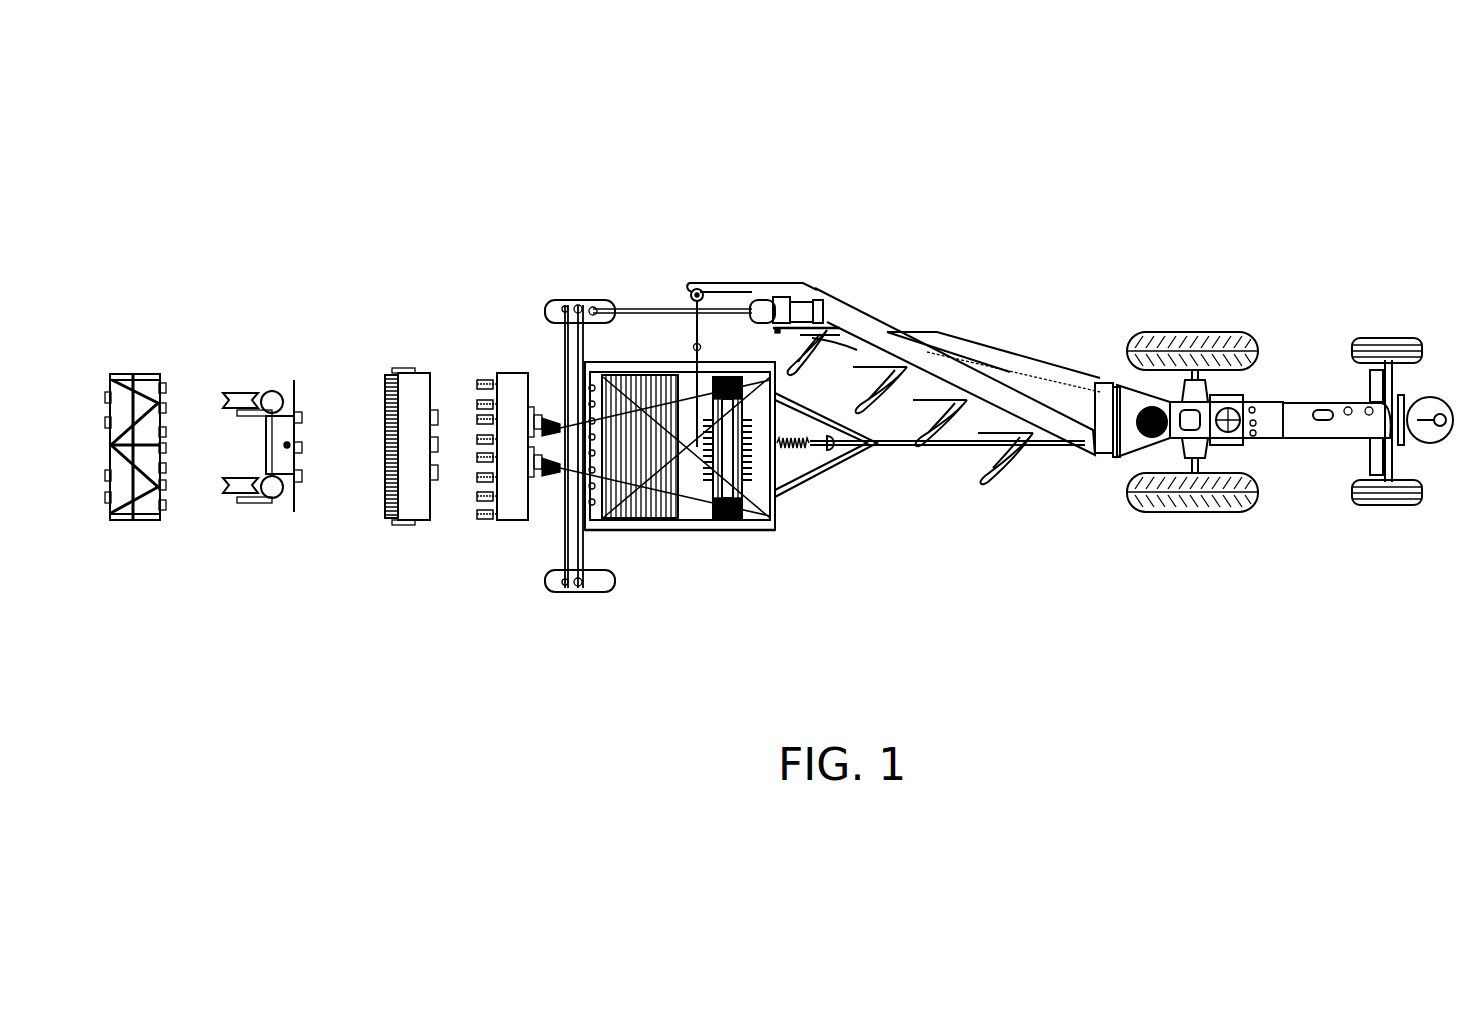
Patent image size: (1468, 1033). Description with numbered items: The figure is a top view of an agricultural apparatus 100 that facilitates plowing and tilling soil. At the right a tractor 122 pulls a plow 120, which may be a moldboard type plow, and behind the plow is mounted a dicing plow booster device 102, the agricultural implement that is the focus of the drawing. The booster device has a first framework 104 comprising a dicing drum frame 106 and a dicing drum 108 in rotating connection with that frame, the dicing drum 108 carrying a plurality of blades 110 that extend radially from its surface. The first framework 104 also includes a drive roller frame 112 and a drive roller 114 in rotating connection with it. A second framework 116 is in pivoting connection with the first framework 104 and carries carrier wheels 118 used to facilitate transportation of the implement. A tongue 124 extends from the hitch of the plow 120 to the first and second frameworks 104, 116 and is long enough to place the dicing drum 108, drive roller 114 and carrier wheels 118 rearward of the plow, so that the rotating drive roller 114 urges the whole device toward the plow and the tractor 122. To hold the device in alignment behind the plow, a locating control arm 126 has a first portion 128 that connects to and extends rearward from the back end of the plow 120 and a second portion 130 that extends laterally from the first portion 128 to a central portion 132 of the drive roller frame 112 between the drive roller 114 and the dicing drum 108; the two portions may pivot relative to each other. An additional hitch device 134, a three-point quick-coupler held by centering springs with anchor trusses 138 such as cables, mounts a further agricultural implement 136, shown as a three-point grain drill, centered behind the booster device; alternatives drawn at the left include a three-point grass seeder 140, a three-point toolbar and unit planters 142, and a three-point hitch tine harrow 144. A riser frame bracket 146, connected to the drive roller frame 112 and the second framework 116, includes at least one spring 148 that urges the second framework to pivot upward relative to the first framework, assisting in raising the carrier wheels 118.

The agricultural apparatus 100 is at (1116, 172).
The dicing plow booster device 102 is at (686, 560).
The first framework 104 is at (707, 523).
The dicing drum frame 106 is at (775, 527).
The dicing drum 108 is at (777, 497).
The blades 110 is at (758, 382).
The drive roller frame 112 is at (667, 520).
The drive roller 114 is at (645, 520).
The second framework 116 is at (562, 523).
The carrier wheels 118 is at (547, 575).
The plow 120 is at (990, 532).
The tractor 122 is at (1298, 507).
The tongue 124 is at (935, 448).
The locating control arm 126 is at (716, 272).
The first portion 128 is at (813, 287).
The second portion 130 is at (694, 343).
The central portion 132 is at (699, 462).
The additional hitch device 134 is at (540, 395).
The further agricultural implement 136 is at (497, 373).
The anchor trusses 138 is at (587, 413).
The three-point grass seeder 140 is at (402, 368).
The three-point toolbar and unit planters 142 is at (272, 390).
The three-point hitch tine harrow 144 is at (140, 373).
The riser frame bracket 146 is at (800, 432).
The spring 148 is at (822, 450).